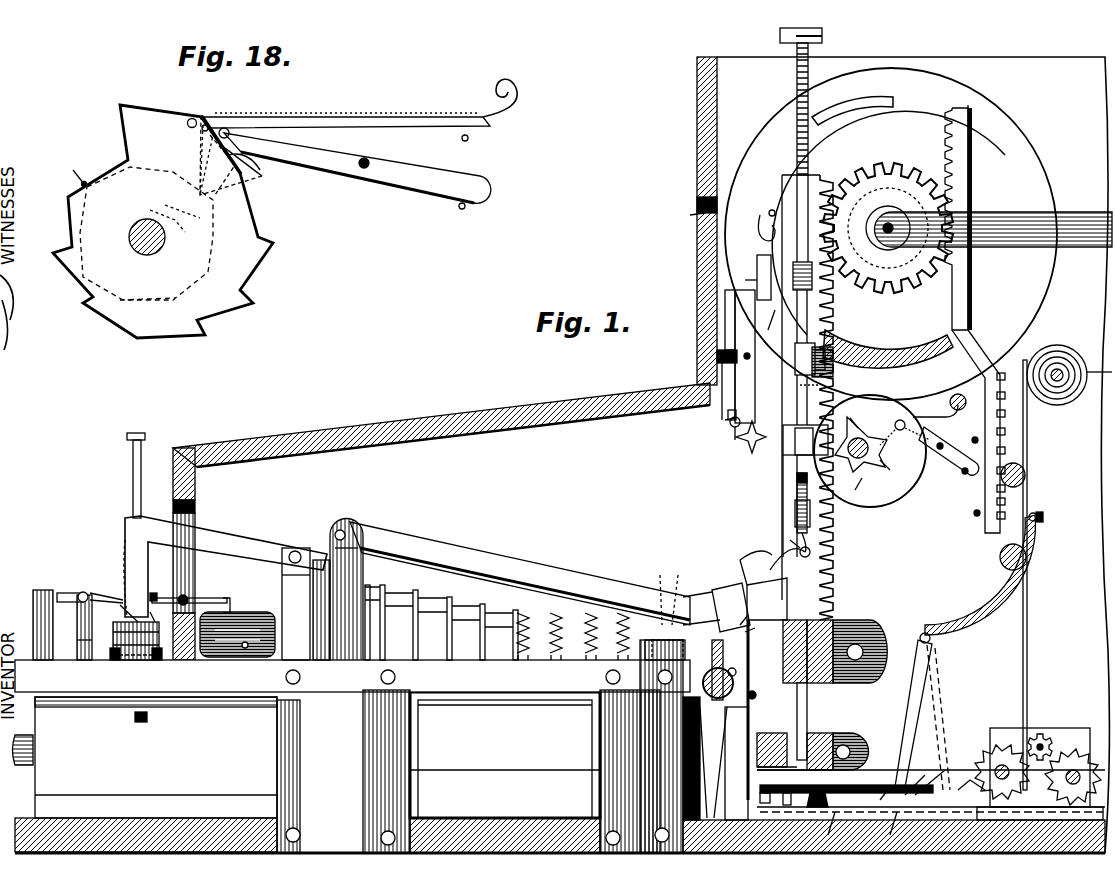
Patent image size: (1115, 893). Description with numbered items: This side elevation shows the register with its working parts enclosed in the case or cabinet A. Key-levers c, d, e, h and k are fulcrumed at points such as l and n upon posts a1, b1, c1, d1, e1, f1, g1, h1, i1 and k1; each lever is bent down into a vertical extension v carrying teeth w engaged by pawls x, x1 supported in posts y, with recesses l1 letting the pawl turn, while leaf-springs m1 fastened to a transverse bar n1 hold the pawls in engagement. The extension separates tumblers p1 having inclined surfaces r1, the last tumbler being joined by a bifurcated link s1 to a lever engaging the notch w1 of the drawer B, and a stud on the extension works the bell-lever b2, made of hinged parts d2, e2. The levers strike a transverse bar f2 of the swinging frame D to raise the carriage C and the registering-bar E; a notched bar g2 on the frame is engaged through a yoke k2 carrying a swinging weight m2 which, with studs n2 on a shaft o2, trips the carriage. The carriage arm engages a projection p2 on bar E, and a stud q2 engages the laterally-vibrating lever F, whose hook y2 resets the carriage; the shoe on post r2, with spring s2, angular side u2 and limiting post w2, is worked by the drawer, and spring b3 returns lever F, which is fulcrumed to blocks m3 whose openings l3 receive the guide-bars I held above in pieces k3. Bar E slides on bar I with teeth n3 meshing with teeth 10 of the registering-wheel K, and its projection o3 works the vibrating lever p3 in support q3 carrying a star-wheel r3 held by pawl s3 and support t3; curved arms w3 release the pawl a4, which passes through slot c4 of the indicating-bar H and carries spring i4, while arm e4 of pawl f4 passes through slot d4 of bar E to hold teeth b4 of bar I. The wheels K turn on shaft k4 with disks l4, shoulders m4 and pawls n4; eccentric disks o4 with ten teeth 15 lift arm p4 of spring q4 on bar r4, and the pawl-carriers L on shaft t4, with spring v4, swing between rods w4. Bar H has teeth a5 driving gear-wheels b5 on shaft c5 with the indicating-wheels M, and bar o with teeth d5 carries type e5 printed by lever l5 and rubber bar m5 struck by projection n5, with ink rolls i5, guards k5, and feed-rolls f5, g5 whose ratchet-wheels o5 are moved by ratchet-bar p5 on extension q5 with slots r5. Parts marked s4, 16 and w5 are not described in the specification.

In FIG. 18, the ratchet wheel 15 is at (165, 232).
In FIG. 18, the hub k4 is at (128, 238).
In FIG. 18, the star wheel l4 is at (146, 233).
In FIG. 1, the star wheel l4 is at (861, 444).
In FIG. 18, the pin m4 is at (150, 210).
In FIG. 18, the pawl pin n4 is at (195, 180).
In FIG. 1, the pawl pin n4 is at (905, 423).
In FIG. 18, the plate o4 is at (165, 300).
In FIG. 18, the teeth 10 is at (233, 232).
In FIG. 1, the teeth 10 is at (871, 453).
In FIG. 18, the pivot p4 is at (193, 118).
In FIG. 18, the pawl s4 is at (264, 176).
In FIG. 18, the spring v4 is at (242, 178).
In FIG. 18, the bar q4 is at (375, 117).
In FIG. 1, the bar q4 is at (935, 417).
In FIG. 18, the lever L is at (355, 165).
In FIG. 1, the lever L is at (949, 452).
In FIG. 18, the stud t4 is at (368, 163).
In FIG. 1, the stud t4 is at (944, 436).
In FIG. 18, the pins w4 is at (200, 130).
In FIG. 1, the pins w4 is at (964, 464).
In FIG. 1, the frame A is at (641, 455).
In FIG. 1, the frame wall h is at (690, 215).
In FIG. 1, the bracket 16 is at (725, 420).
In FIG. 1, the wheel rim o is at (972, 272).
In FIG. 1, the shaft c5 is at (890, 224).
In FIG. 1, the gear wheel M is at (888, 215).
In FIG. 1, the hub a5 is at (866, 212).
In FIG. 1, the gear body b5 is at (888, 228).
In FIG. 1, the toothed bar d5 is at (945, 160).
In FIG. 1, the teeth e5 is at (1007, 449).
In FIG. 1, the curved guide a4 is at (822, 298).
In FIG. 1, the ratchet wheels o5 is at (1043, 575).
In FIG. 1, the pinion f5 is at (1045, 735).
In FIG. 1, the frame g5 is at (990, 748).
In FIG. 1, the bar p5 is at (931, 813).
In FIG. 1, the screw rod I is at (797, 70).
In FIG. 1, the knob and spring k5 is at (822, 38).
In FIG. 1, the rack H is at (807, 397).
In FIG. 1, the hook w5 is at (769, 225).
In FIG. 1, the post w is at (760, 257).
In FIG. 1, the block b4 is at (793, 290).
In FIG. 1, the link k3 is at (766, 315).
In FIG. 1, the slide c4 is at (795, 322).
In FIG. 1, the pin i4 is at (815, 323).
In FIG. 1, the block o3 is at (801, 491).
In FIG. 1, the pivot r4 is at (960, 396).
In FIG. 1, the disc K is at (870, 451).
In FIG. 1, the coils i5 is at (1025, 475).
In FIG. 1, the lever m5 is at (1043, 517).
In FIG. 1, the curved arm l5 is at (980, 575).
In FIG. 1, the link n5 is at (945, 775).
In FIG. 1, the pawl r5 is at (970, 790).
In FIG. 1, the foot w2 is at (905, 785).
In FIG. 1, the bar C is at (860, 786).
In FIG. 1, the stop r2 is at (790, 788).
In FIG. 1, the wedge s2 is at (823, 789).
In FIG. 1, the stop w3 is at (766, 800).
In FIG. 1, the pin u2 is at (830, 826).
In FIG. 1, the pin q5 is at (895, 827).
In FIG. 1, the block k2 is at (783, 650).
In FIG. 1, the rod l3 is at (807, 735).
In FIG. 1, the block n3 is at (853, 535).
In FIG. 1, the block m3 is at (848, 738).
In FIG. 1, the plunger F is at (750, 725).
In FIG. 1, the bar b3 is at (757, 696).
In FIG. 1, the disc m2 is at (712, 650).
In FIG. 1, the bar n2 is at (727, 670).
In FIG. 1, the bar end c is at (716, 609).
In FIG. 1, the block p2 is at (768, 585).
In FIG. 1, the plate o2 is at (668, 712).
In FIG. 1, the pin q2 is at (751, 618).
In FIG. 1, the pin y2 is at (759, 635).
In FIG. 1, the rod f2 is at (657, 591).
In FIG. 1, the rod g2 is at (712, 592).
In FIG. 1, the link n is at (775, 559).
In FIG. 1, the link l is at (784, 540).
In FIG. 1, the bar d4 is at (797, 480).
In FIG. 1, the slide E is at (808, 477).
In FIG. 1, the block f4 is at (795, 506).
In FIG. 1, the bar p3 is at (757, 394).
In FIG. 1, the bracket q3 is at (746, 390).
In FIG. 1, the star wheel r3 is at (740, 448).
In FIG. 1, the pin s3 is at (722, 428).
In FIG. 1, the block t3 is at (725, 410).
In FIG. 1, the opening x is at (600, 771).
In FIG. 1, the base B is at (145, 757).
In FIG. 1, the stop w1 is at (147, 717).
In FIG. 1, the bar D is at (520, 573).
In FIG. 1, the pin e4 is at (346, 551).
In FIG. 1, the key h1 is at (372, 622).
In FIG. 1, the key g1 is at (396, 622).
In FIG. 1, the key f1 is at (430, 625).
In FIG. 1, the key e1 is at (463, 628).
In FIG. 1, the key d1 is at (499, 632).
In FIG. 1, the spring c1 is at (535, 656).
In FIG. 1, the spring b1 is at (567, 656).
In FIG. 1, the spring a1 is at (598, 656).
In FIG. 1, the rod l1 is at (125, 520).
In FIG. 1, the lever k is at (232, 538).
In FIG. 1, the leg v is at (121, 578).
In FIG. 1, the block k1 is at (296, 604).
In FIG. 1, the post i1 is at (318, 615).
In FIG. 1, the post n1 is at (37, 598).
In FIG. 1, the bar m1 is at (65, 593).
In FIG. 1, the post x1 is at (77, 607).
In FIG. 1, the bar y is at (77, 630).
In FIG. 1, the coil p1 is at (130, 660).
In FIG. 1, the plate s1 is at (115, 660).
In FIG. 1, the plate r1 is at (150, 662).
In FIG. 1, the link d is at (122, 611).
In FIG. 1, the rod b2 is at (188, 600).
In FIG. 1, the pin d2 is at (158, 617).
In FIG. 1, the magnet e2 is at (215, 612).
In FIG. 1, the core e is at (242, 645).